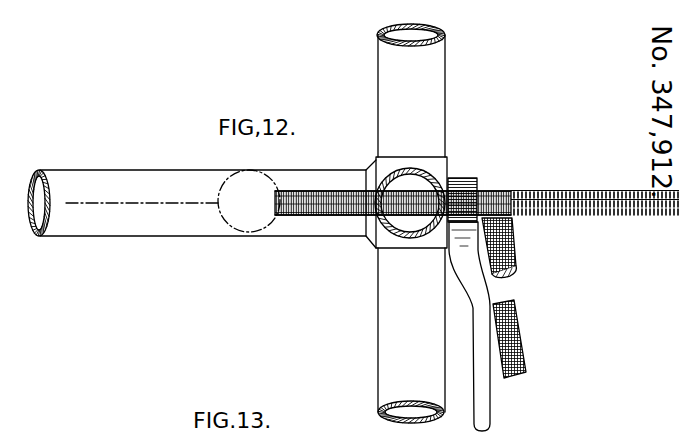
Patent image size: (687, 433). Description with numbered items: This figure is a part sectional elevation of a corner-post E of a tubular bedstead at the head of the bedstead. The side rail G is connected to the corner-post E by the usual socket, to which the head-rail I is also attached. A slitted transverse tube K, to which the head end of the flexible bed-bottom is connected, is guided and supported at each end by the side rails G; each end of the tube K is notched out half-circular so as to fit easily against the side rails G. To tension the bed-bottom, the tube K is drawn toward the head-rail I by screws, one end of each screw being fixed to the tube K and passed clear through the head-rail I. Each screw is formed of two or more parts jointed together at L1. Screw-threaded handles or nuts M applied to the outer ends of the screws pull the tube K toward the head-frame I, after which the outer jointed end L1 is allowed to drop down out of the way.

The side rail G is at (202, 202).
The slitted transverse tube K is at (249, 201).
The corner-post E is at (411, 223).
The head-rail I is at (434, 186).
The jointed end of screw L1 is at (518, 273).
The screw-threaded handle or nut M is at (469, 326).